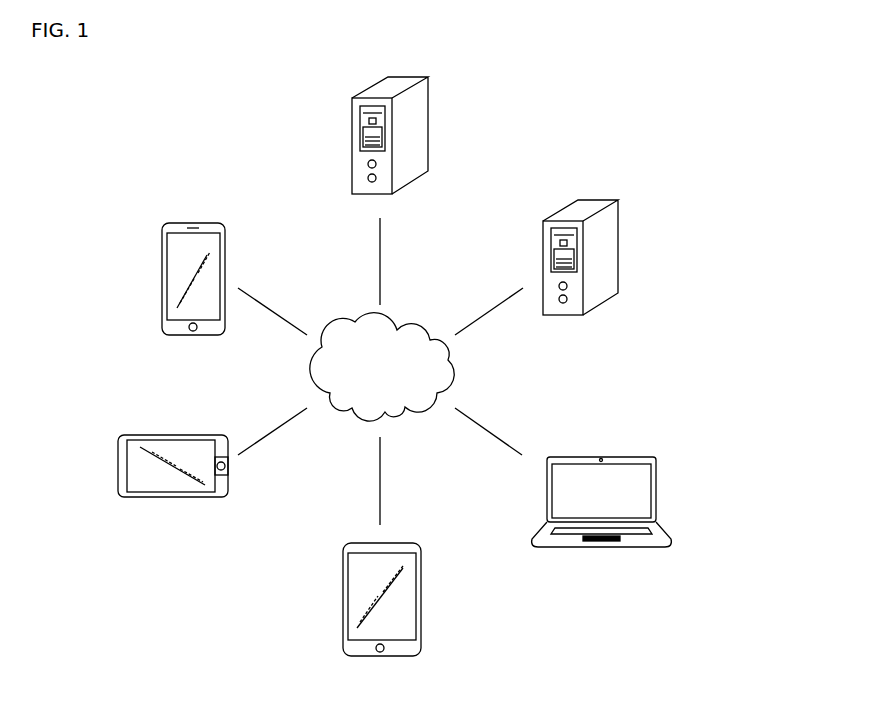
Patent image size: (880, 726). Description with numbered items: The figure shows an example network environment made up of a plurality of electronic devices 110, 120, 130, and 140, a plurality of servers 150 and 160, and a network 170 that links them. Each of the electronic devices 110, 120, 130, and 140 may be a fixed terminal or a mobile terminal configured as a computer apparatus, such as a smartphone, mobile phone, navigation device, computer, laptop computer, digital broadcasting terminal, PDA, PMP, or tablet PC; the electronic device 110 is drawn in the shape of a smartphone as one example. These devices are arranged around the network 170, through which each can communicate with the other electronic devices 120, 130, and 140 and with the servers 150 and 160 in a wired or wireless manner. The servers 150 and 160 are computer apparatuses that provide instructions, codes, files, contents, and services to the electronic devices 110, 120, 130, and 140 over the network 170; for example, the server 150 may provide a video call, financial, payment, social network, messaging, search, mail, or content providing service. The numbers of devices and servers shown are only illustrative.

The electronic device 110 is at (162, 278).
The electronic device 120 is at (117, 464).
The electronic device 130 is at (421, 599).
The electronic device 140 is at (656, 493).
The server 150 is at (618, 248).
The server 160 is at (428, 123).
The network 170 is at (403, 324).